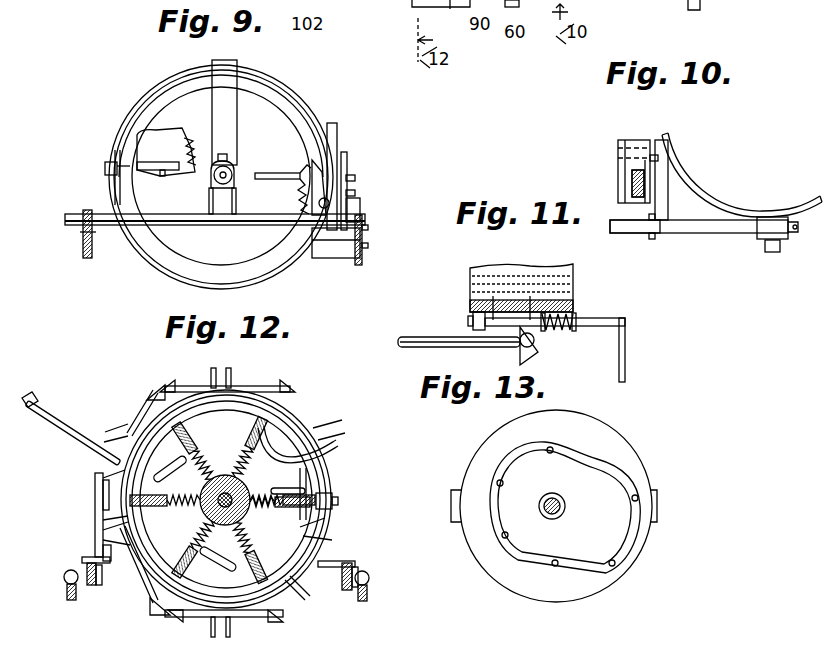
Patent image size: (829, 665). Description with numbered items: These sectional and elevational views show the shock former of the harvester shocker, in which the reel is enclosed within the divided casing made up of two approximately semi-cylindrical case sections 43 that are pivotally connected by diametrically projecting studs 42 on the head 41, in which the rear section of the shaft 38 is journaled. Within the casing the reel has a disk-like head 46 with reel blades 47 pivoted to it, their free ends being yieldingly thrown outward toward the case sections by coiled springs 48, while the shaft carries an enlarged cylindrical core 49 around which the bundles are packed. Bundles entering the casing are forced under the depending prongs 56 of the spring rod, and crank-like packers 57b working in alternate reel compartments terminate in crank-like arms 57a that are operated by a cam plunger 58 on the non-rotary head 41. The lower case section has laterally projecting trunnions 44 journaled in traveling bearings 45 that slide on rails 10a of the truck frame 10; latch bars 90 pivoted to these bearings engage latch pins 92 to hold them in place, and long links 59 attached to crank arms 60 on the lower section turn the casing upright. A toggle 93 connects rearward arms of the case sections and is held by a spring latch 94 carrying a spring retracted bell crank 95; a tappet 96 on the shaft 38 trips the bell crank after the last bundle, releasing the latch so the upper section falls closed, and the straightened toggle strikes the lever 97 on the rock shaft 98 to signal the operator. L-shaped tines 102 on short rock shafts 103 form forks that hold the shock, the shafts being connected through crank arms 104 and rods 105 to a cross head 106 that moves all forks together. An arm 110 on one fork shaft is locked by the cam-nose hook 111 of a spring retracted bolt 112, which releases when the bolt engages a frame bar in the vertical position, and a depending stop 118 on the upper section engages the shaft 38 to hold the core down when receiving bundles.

In FIG. 9, the truck frame 10 is at (83, 256).
In FIG. 9, the rails 10a is at (362, 255).
In FIG. 10, the rails 10a is at (642, 188).
In FIG. 12, the rails 10a is at (342, 590).
In FIG. 9, the shaft 38 is at (214, 182).
In FIG. 12, the shaft 38 is at (235, 512).
In FIG. 13, the shaft 38 is at (565, 512).
In FIG. 9, the head 41 is at (221, 176).
In FIG. 13, the head 41 is at (600, 432).
In FIG. 9, the studs 42 is at (105, 168).
In FIG. 12, the studs 42 is at (338, 502).
In FIG. 9, the casing sections 43 is at (155, 84).
In FIG. 10, the casing sections 43 is at (760, 218).
In FIG. 11, the casing sections 43 is at (558, 272).
In FIG. 12, the casing sections 43 is at (318, 471).
In FIG. 10, the trunnions 44 is at (660, 148).
In FIG. 10, the traveling bearings 45 is at (636, 160).
In FIG. 12, the reel head 46 is at (287, 531).
In FIG. 12, the reel blades 47 is at (192, 422).
In FIG. 12, the coiled springs 48 is at (234, 487).
In FIG. 12, the core 49 is at (227, 476).
In FIG. 12, the depending prongs 56 is at (284, 446).
In FIG. 13, the crank-like arms 57a is at (700, 563).
In FIG. 9, the crank-like packer 57b is at (166, 152).
In FIG. 12, the crank-like packer 57b is at (218, 576).
In FIG. 13, the cam plunger 58 is at (602, 463).
In FIG. 10, the links 59 is at (641, 243).
In FIG. 10, the crank arms 60 is at (700, 232).
In FIG. 12, the latch bars 90 is at (74, 601).
In FIG. 12, the latch pins 92 is at (148, 490).
In FIG. 9, the toggle 93 is at (337, 160).
In FIG. 9, the spring latch 94 is at (313, 205).
In FIG. 9, the bell crank 95 is at (282, 174).
In FIG. 9, the tappet 96 is at (234, 172).
In FIG. 9, the lever 97 is at (355, 178).
In FIG. 9, the rock shaft 98 is at (93, 297).
In FIG. 12, the tines 102 is at (120, 432).
In FIG. 12, the rock shafts 103 is at (140, 412).
In FIG. 12, the crank arms 104 is at (108, 476).
In FIG. 12, the rods 105 is at (98, 483).
In FIG. 12, the cross head 106 is at (98, 500).
In FIG. 11, the arm 110 is at (425, 338).
In FIG. 12, the arm 110 is at (48, 391).
In FIG. 11, the cam-nose hook 111 is at (536, 352).
In FIG. 11, the spring retracted bolt 112 is at (603, 328).
In FIG. 9, the depending stop 118 is at (236, 103).